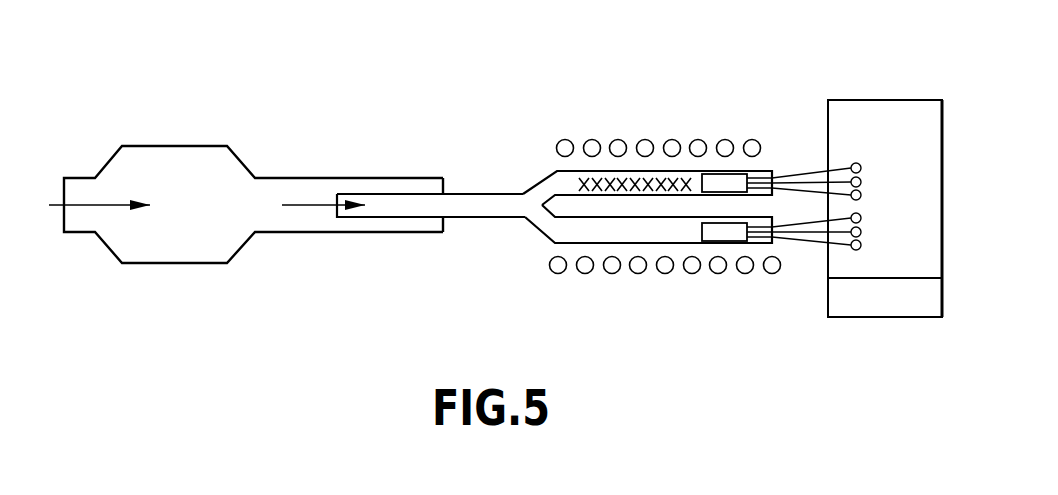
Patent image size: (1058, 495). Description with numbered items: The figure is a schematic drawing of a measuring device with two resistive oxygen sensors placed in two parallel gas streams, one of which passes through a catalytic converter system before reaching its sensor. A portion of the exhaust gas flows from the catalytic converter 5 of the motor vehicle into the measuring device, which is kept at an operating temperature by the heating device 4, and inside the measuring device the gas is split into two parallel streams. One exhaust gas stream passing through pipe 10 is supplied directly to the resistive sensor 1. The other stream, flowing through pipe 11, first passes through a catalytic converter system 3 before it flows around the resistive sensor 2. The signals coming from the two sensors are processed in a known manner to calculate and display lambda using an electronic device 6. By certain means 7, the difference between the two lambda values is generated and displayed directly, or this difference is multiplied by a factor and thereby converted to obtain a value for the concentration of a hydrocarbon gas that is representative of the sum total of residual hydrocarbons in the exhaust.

The resistive sensor 1 is at (737, 233).
The resistive sensor 2 is at (718, 182).
The catalytic converter system 3 is at (608, 180).
The heating device 4 is at (668, 140).
The catalytic converter 5 is at (195, 163).
The electronic device 6 is at (850, 135).
The means 7 is at (839, 295).
The pipe 10 is at (550, 228).
The pipe 11 is at (543, 185).